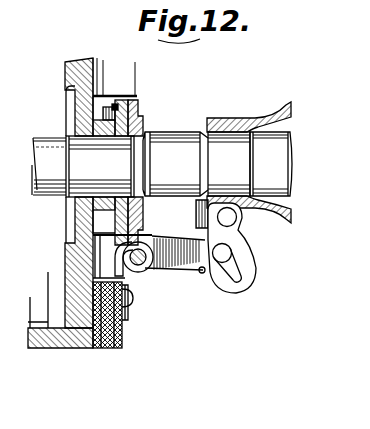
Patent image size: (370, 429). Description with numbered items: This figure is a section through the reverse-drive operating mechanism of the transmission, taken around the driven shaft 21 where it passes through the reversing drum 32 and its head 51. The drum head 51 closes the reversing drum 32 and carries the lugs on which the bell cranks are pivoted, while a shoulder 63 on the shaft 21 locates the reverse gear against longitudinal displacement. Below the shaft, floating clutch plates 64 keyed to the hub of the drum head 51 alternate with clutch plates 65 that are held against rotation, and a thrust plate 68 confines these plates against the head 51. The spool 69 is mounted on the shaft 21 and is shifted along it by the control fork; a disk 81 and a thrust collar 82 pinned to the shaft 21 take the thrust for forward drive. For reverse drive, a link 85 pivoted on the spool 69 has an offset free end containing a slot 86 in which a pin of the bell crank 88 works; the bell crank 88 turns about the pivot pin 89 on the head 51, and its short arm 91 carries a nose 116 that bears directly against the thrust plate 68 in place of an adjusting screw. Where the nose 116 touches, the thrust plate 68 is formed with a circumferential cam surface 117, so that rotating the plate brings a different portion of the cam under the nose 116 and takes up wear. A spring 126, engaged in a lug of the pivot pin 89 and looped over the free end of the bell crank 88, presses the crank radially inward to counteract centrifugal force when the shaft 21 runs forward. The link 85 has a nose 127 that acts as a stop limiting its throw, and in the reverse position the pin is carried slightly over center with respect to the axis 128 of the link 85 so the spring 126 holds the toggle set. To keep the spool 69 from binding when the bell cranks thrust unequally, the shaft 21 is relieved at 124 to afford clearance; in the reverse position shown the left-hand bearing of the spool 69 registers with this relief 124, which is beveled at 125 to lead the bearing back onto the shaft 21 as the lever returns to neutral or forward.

The driven shaft 21 is at (283, 162).
The reversing drum 32 is at (43, 350).
The drum head 51 is at (66, 84).
The shoulder 63 is at (70, 172).
The floating clutch plates 64 is at (116, 349).
The clutch plates 65 is at (108, 349).
The thrust plate 68 is at (128, 310).
The spool 69 is at (228, 124).
The disk 81 is at (141, 118).
The thrust collar 82 is at (133, 108).
The link 85 is at (250, 272).
The slot 86 is at (232, 283).
The bell crank 88 is at (200, 273).
The pivot pin 89 is at (148, 253).
The short arm 91 is at (136, 288).
The nose 116 is at (133, 302).
The cam surface 117 is at (125, 318).
The relief 124 is at (229, 164).
The bevel 125 is at (196, 155).
The spring 126 is at (141, 248).
The nose 127 is at (212, 206).
The axis 128 is at (235, 222).